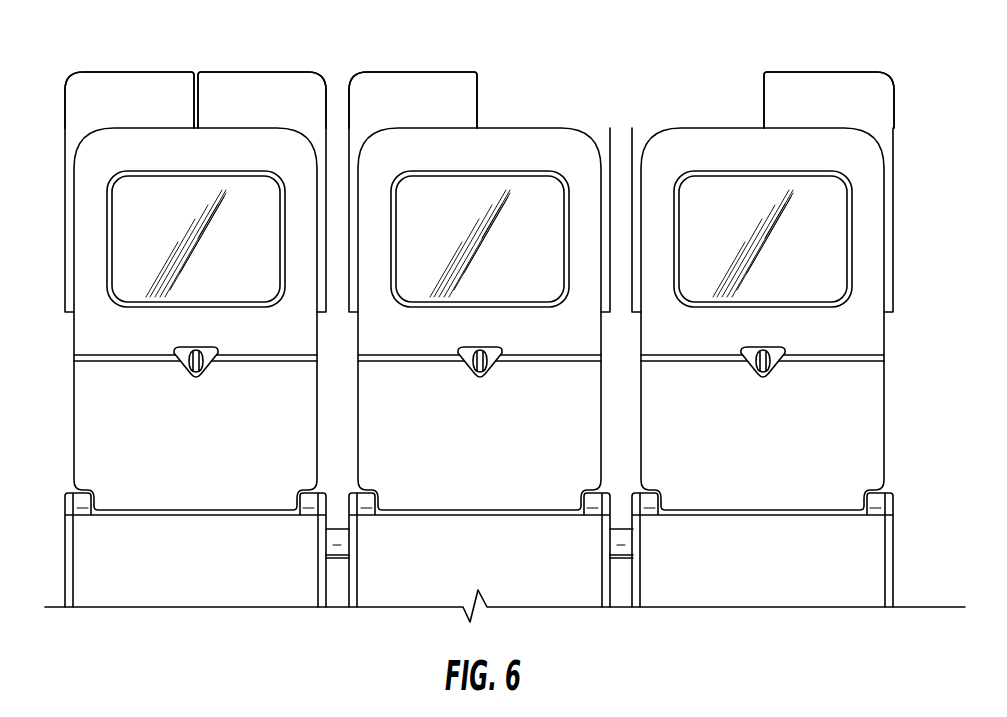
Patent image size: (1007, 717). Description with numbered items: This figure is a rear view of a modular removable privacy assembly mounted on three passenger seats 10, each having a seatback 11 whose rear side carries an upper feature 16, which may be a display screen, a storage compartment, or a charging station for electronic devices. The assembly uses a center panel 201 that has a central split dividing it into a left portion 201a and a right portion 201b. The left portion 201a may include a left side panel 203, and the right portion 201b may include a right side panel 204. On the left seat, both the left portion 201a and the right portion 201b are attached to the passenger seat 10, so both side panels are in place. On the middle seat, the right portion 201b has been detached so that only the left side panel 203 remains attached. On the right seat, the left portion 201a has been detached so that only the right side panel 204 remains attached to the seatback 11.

The passenger seat 10 is at (227, 484).
The seatback 11 is at (136, 461).
The upper feature 16 is at (256, 260).
The center panel 201 is at (97, 88).
The left portion 201a is at (167, 88).
The right portion 201b is at (260, 88).
The left side panel 203 is at (68, 222).
The right side panel 204 is at (320, 283).